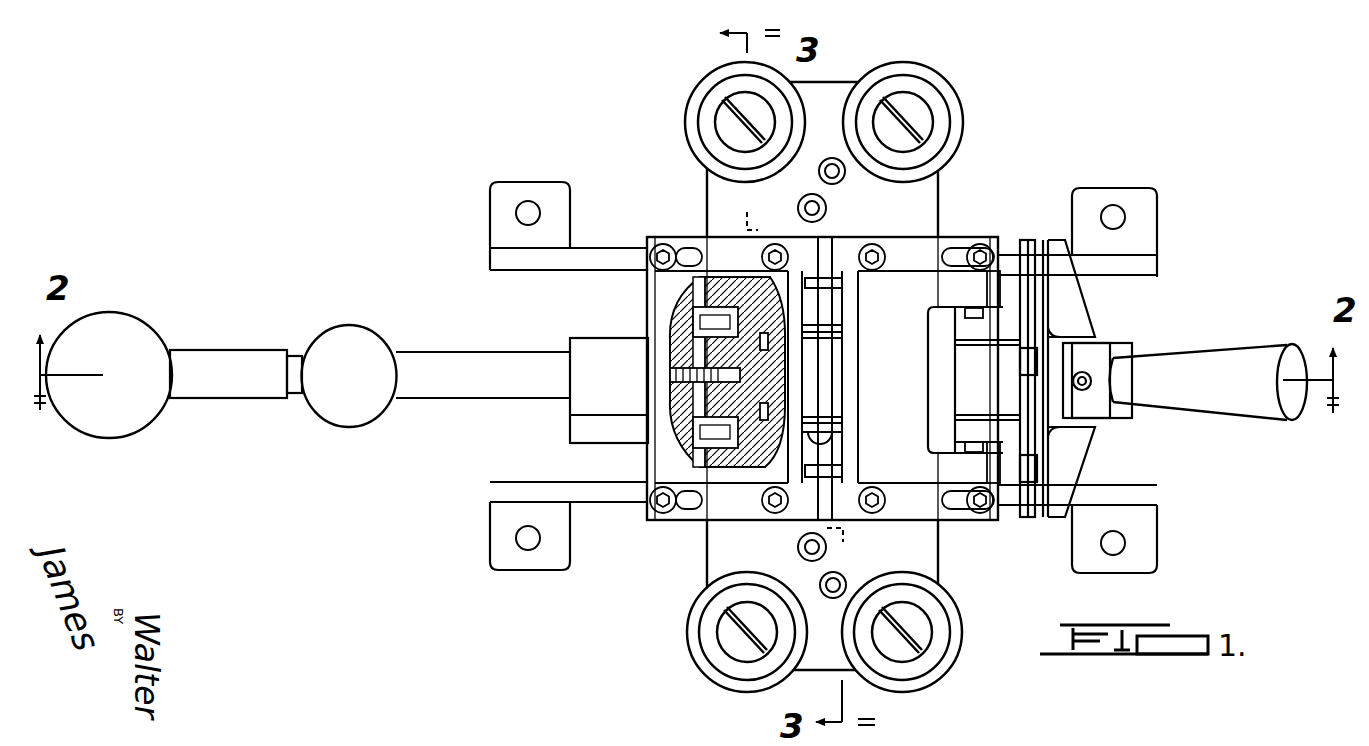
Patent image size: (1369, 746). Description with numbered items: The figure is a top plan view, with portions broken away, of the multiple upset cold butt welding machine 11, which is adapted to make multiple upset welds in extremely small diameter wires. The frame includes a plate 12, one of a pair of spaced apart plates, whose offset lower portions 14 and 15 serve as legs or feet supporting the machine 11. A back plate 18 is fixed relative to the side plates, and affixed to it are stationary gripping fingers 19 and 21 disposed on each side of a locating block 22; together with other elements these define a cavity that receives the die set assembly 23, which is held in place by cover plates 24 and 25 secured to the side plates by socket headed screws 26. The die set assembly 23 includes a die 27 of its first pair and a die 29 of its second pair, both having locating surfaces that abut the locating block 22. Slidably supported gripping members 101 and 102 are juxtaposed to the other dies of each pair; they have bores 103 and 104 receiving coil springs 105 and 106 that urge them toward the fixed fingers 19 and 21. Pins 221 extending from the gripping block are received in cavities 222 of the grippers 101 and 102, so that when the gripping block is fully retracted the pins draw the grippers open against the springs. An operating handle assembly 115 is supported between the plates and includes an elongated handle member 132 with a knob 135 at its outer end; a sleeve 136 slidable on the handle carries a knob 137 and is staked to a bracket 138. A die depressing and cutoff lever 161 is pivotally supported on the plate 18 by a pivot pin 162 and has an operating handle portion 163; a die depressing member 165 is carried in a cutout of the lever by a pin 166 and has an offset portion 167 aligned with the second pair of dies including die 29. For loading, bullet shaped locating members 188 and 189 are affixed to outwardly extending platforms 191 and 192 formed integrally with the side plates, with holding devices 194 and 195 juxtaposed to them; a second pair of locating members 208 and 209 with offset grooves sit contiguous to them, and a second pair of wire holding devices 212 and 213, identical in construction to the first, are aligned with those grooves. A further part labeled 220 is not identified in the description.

The multiple upset cold butt welding machine 11 is at (660, 553).
The plate 12 is at (490, 260).
The offset portion 14 is at (490, 548).
The offset portion 15 is at (490, 198).
The back plate 18 is at (992, 303).
The stationary gripping finger 19 is at (845, 423).
The stationary gripping finger 21 is at (837, 348).
The locating block 22 is at (905, 292).
The die set assembly 23 is at (845, 365).
The cover plate 24 is at (940, 242).
The cover plate 25 is at (668, 312).
The socket headed screws 26 is at (772, 248).
The die 27 is at (845, 390).
The die 29 is at (847, 358).
The gripping member 101 is at (812, 432).
The gripping member 102 is at (790, 338).
The bore 103 is at (693, 413).
The bore 104 is at (705, 288).
The coil spring 105 is at (717, 458).
The coil spring 106 is at (721, 261).
The operating handle assembly 115 is at (460, 422).
The elongated handle member 132 is at (298, 348).
The knob 135 is at (135, 318).
The sleeve 136 is at (468, 360).
The knob 137 is at (355, 332).
The bracket 138 is at (580, 408).
The die depressing and cutoff lever 161 is at (1212, 425).
The pivot pin 162 is at (920, 497).
The operating handle portion 163 is at (1228, 355).
The die depressing member 165 is at (1062, 332).
The pin 166 is at (1090, 390).
The offset portion 167 is at (1020, 358).
The bullet shaped locating member 188 is at (797, 208).
The bullet shaped locating member 189 is at (797, 549).
The platform 191 is at (940, 178).
The platform 192 is at (940, 565).
The holding device 194 is at (698, 93).
The holding device 195 is at (688, 634).
The locating member 208 is at (845, 180).
The locating member 209 is at (845, 583).
The wire holding device 212 is at (950, 95).
The wire holding device 213 is at (958, 625).
The piston rod 220 is at (705, 389).
The pins 221 is at (750, 437).
The cavities 222 is at (693, 322).